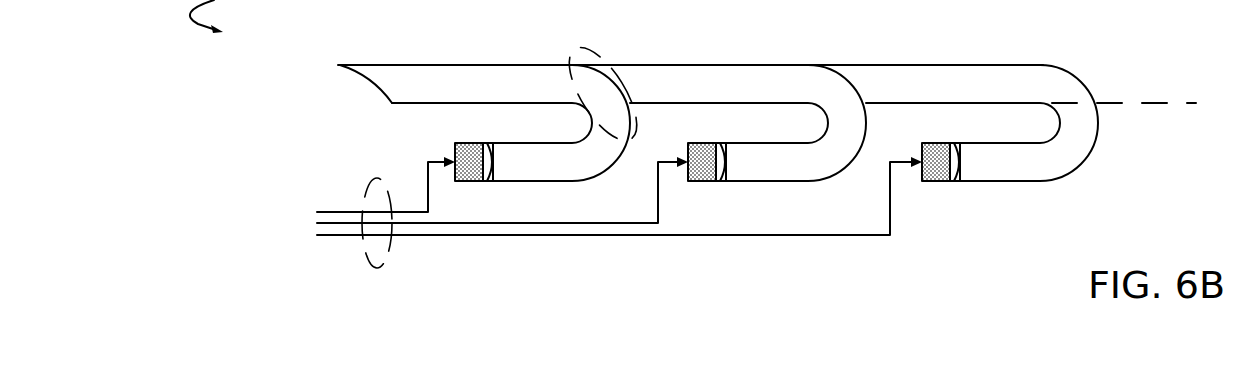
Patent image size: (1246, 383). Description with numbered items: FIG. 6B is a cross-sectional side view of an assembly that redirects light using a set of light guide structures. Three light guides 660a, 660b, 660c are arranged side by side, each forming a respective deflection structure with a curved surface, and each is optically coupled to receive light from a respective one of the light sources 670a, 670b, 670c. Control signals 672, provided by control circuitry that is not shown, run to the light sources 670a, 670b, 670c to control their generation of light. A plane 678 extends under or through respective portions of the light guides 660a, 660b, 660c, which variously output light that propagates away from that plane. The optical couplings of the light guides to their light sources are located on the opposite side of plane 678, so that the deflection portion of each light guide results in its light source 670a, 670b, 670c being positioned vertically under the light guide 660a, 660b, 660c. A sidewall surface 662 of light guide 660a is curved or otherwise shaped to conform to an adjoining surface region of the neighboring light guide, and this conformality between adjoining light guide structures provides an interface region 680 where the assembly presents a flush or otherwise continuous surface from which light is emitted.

The sidewall surface 662 is at (368, 86).
The light guide 660a is at (517, 92).
The light guide 660b is at (750, 92).
The light guide 660c is at (984, 92).
The light source 670a is at (470, 150).
The light source 670b is at (703, 150).
The light source 670c is at (937, 150).
The control signals 672 is at (371, 266).
The plane 678 is at (1124, 94).
The region 680 is at (581, 46).